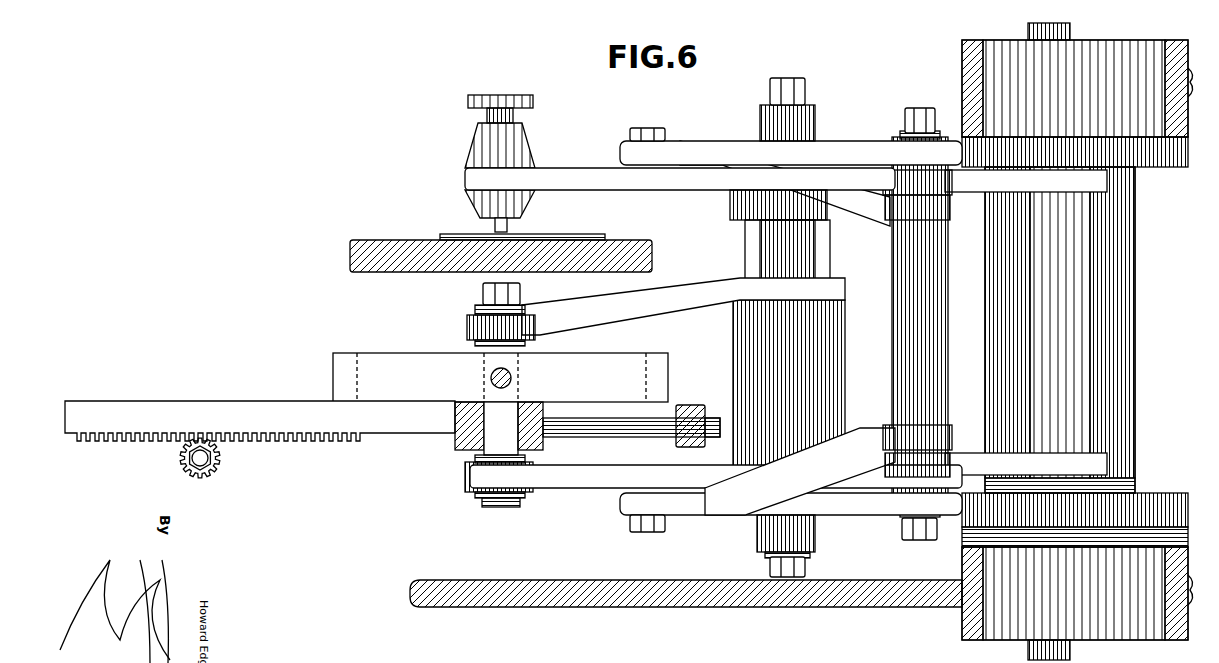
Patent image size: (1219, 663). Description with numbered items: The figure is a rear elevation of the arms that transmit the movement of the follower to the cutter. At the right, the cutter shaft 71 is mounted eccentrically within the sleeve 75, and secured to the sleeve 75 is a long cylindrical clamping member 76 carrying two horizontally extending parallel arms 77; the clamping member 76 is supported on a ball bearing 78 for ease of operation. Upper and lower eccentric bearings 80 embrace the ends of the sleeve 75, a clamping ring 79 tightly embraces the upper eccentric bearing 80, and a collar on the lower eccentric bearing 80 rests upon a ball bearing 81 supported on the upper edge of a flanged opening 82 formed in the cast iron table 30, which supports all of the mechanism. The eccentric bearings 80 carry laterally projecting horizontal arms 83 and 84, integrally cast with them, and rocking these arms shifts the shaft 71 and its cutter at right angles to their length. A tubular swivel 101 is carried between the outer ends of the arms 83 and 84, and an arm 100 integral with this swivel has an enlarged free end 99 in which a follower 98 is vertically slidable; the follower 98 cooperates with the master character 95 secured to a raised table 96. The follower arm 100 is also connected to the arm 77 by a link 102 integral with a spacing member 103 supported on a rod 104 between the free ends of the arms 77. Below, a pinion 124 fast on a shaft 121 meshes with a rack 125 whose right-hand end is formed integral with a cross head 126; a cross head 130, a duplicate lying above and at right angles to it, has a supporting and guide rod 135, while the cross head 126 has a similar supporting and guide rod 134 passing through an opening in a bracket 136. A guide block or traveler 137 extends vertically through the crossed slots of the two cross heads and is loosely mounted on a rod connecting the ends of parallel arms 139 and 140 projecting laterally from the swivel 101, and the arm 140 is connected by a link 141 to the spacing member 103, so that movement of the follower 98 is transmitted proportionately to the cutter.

The table 30 is at (678, 607).
The shaft 71 is at (1070, 30).
The sleeve 75 is at (1152, 642).
The clamping member 76 is at (1135, 343).
The arms 77 is at (962, 193).
The ball bearing 78 is at (1135, 489).
The clamping ring 79 is at (1185, 38).
The eccentric bearings 80 is at (1128, 32).
The ball bearing 81 is at (962, 538).
The flanged opening 82 is at (968, 565).
The horizontal arm 83 is at (853, 146).
The horizontal arm 84 is at (857, 513).
The master character 95 is at (442, 237).
The raised table 96 is at (350, 256).
The follower 98 is at (508, 230).
The enlarged free end 99 is at (477, 152).
The arm 100 is at (578, 191).
The tubular swivel 101 is at (845, 326).
The link 102 is at (697, 147).
The spacing member 103 is at (892, 268).
The rod 104 is at (930, 98).
The shaft 121 is at (188, 463).
The pinion 124 is at (214, 462).
The rack 125 is at (122, 401).
The cross head 126 is at (543, 447).
The cross head 130 is at (668, 358).
The supporting and guide rod 134 is at (614, 438).
The supporting and guide rod 135 is at (511, 378).
The bracket 136 is at (690, 404).
The guide block or traveler 137 is at (486, 456).
The arm 139 is at (642, 318).
The arm 140 is at (562, 490).
The link 141 is at (693, 517).